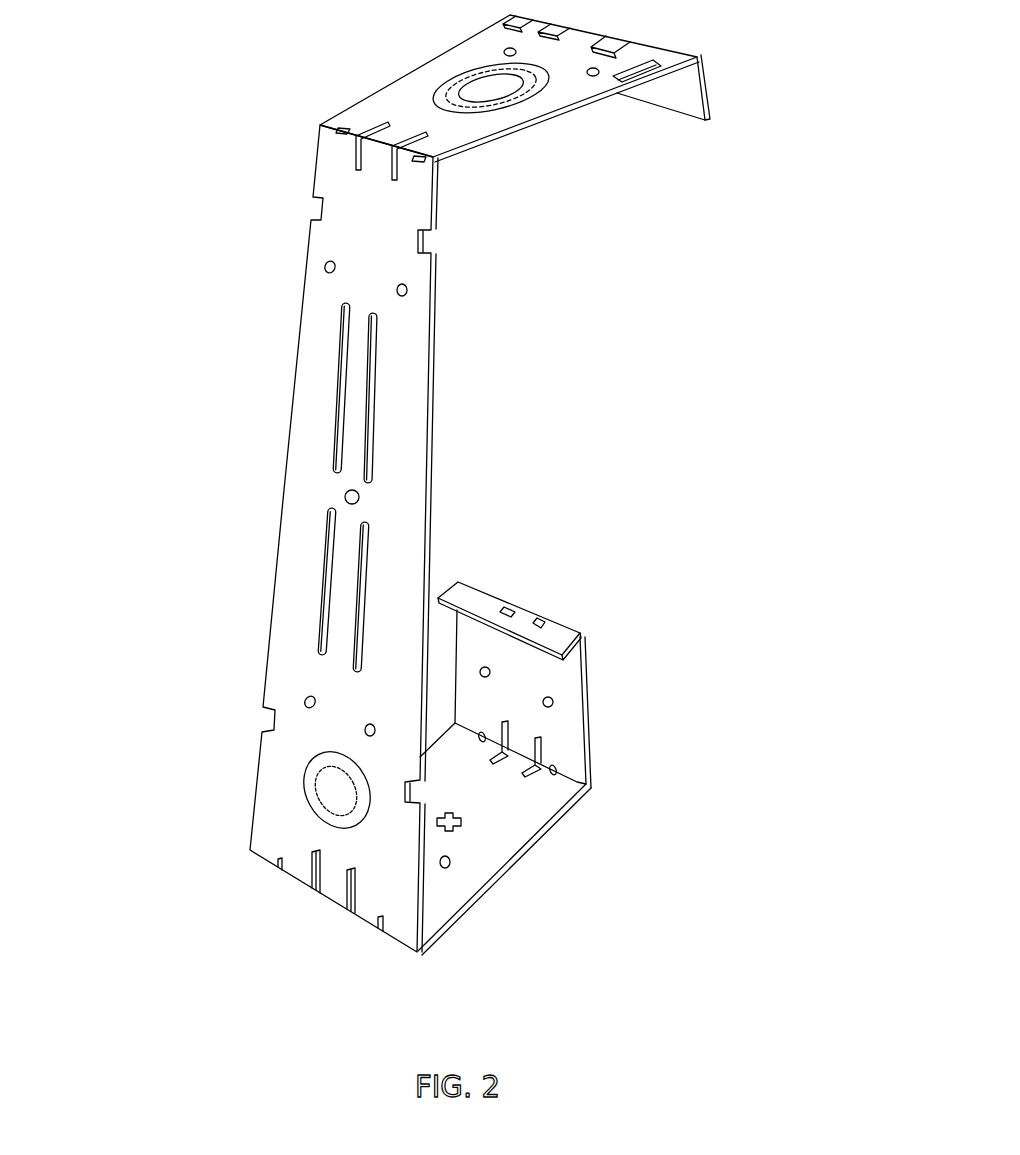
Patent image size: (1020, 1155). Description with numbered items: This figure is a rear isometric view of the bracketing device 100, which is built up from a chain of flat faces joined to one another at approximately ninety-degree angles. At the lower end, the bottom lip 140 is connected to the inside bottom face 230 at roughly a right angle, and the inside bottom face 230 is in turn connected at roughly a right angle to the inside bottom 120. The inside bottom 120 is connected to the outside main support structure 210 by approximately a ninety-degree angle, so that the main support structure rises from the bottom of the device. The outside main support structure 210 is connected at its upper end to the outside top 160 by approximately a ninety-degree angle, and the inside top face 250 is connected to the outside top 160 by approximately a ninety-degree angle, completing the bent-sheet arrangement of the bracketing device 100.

The bracketing device 100 is at (429, 485).
The inside bottom 120 is at (498, 803).
The bottom lip 140 is at (468, 598).
The outside top 160 is at (407, 107).
The outside main support structure 210 is at (322, 345).
The inside bottom face 230 is at (525, 682).
The inside top face 250 is at (675, 98).